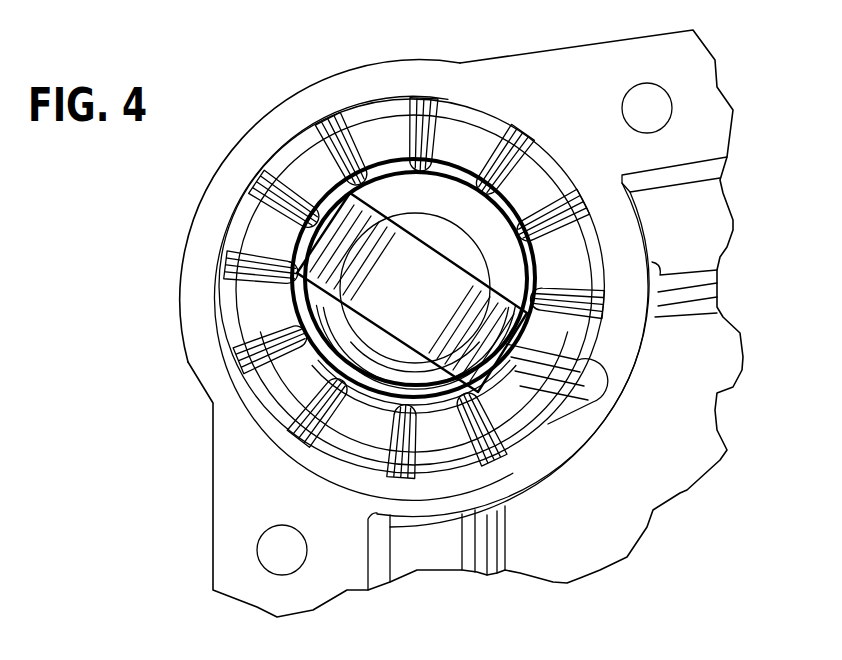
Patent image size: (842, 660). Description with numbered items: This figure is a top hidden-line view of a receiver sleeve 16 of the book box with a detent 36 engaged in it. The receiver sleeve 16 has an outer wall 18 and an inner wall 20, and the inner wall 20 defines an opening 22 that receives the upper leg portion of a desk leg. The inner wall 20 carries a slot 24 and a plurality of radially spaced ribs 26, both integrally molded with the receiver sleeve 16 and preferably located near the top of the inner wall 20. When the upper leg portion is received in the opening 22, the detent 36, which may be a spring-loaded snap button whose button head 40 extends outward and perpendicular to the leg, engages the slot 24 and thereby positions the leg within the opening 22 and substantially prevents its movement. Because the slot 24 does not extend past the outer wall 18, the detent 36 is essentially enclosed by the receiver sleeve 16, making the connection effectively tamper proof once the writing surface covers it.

The receiver sleeve 16 is at (211, 207).
The outer wall 18 is at (177, 290).
The inner wall 20 is at (273, 315).
The opening 22 is at (376, 343).
The slot 24 is at (600, 364).
The ribs 26 is at (338, 167).
The detent 36 is at (429, 302).
The button head 40 is at (543, 413).